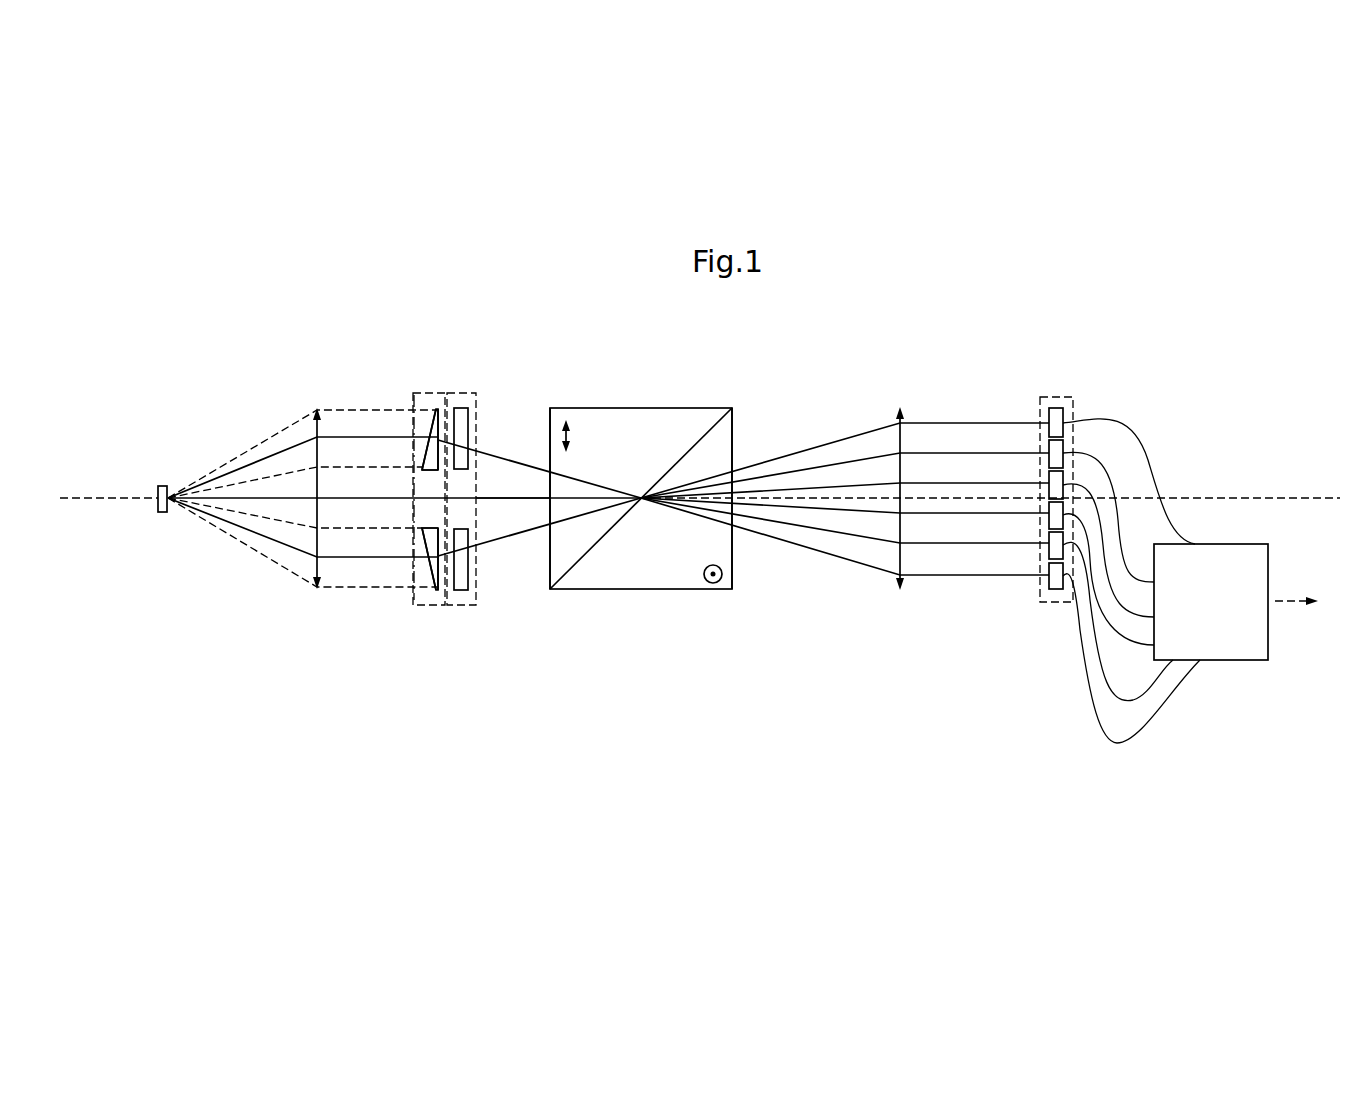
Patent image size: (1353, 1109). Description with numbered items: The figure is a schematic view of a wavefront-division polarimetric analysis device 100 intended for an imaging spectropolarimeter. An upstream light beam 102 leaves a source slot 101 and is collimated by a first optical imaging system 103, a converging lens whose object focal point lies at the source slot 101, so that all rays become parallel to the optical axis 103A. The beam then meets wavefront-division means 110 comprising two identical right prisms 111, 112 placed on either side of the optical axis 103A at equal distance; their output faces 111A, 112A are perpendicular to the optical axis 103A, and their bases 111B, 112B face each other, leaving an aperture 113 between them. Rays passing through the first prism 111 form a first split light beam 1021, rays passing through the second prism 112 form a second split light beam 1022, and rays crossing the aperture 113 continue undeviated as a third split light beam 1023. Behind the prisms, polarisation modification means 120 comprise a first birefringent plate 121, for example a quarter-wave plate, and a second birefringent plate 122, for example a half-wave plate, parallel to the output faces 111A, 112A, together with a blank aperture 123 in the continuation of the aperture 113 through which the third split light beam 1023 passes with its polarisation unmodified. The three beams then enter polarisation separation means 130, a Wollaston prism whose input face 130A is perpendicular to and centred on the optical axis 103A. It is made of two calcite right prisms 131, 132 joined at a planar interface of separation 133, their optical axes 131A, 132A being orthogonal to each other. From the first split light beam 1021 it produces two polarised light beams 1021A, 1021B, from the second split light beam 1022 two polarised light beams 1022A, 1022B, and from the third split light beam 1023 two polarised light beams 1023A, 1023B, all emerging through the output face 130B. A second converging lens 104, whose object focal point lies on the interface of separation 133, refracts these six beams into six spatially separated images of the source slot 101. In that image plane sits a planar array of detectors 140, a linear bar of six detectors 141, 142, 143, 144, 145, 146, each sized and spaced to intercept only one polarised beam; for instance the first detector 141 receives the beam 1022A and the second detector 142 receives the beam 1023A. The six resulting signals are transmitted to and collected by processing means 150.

The polarimetric analysis device 100 is at (240, 706).
The source slot 101 is at (158, 490).
The upstream light beam 102 is at (278, 530).
The first optical imaging system 103 is at (310, 570).
The optical axis 103A is at (107, 500).
The second converging lens 104 is at (902, 558).
The wavefront-division means 110 is at (406, 522).
The first prism 111 is at (432, 478).
The output face of first prism 111A is at (443, 405).
The base of first prism 111B is at (415, 477).
The second prism 112 is at (437, 580).
The output face of second prism 112A is at (445, 584).
The base of second prism 112B is at (412, 522).
The aperture 113 is at (432, 493).
The polarisation modification means 120 is at (490, 556).
The first birefringent plate 121 is at (470, 408).
The second birefringent plate 122 is at (466, 593).
The blank aperture 123 is at (462, 482).
The polarisation separation means 130 is at (672, 494).
The input face of Wollaston prism 130A is at (550, 590).
The output face of Wollaston prism 130B is at (733, 410).
The first right prism of Wollaston prism 131 is at (637, 417).
The optical axis of first Wollaston prism 131A is at (570, 437).
The second right prism of Wollaston prism 132 is at (633, 582).
The optical axis of second Wollaston prism 132A is at (702, 582).
The planar interface of separation 133 is at (700, 440).
The planar array of detectors 140 is at (1078, 531).
The first detector 141 is at (1057, 405).
The second detector 142 is at (1072, 443).
The third detector 143 is at (1065, 473).
The fourth detector 144 is at (1063, 508).
The fifth detector 145 is at (1045, 552).
The sixth detector 146 is at (1045, 585).
The processing means 150 is at (1243, 664).
The first split light beam 1021 is at (527, 464).
The second split light beam 1022 is at (482, 557).
The third split light beam 1023 is at (492, 502).
The polarised light beam 1021A is at (850, 545).
The polarised light beam 1021B is at (863, 565).
The polarised light beam 1022A is at (878, 428).
The polarised light beam 1022B is at (850, 458).
The polarised light beam 1023A is at (815, 488).
The polarised light beam 1023B is at (815, 510).